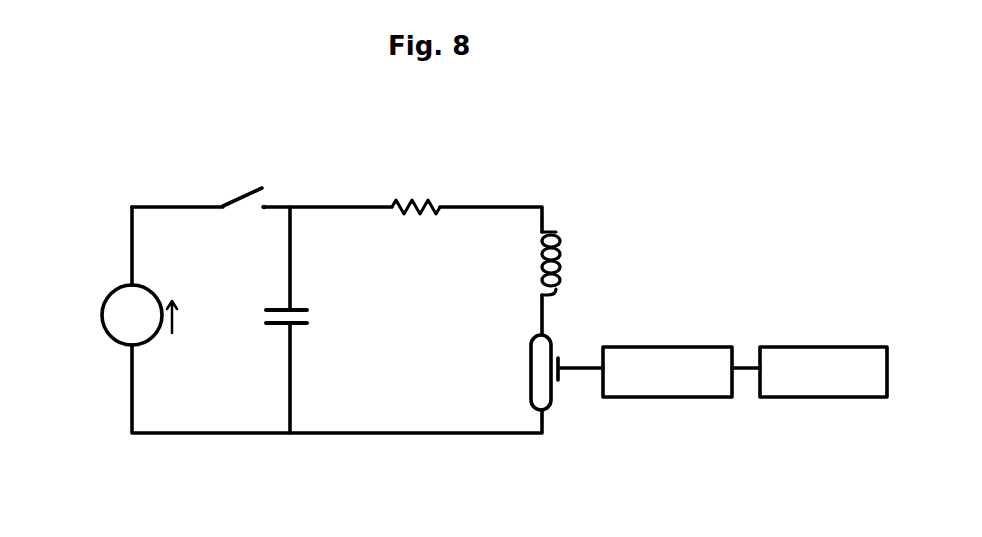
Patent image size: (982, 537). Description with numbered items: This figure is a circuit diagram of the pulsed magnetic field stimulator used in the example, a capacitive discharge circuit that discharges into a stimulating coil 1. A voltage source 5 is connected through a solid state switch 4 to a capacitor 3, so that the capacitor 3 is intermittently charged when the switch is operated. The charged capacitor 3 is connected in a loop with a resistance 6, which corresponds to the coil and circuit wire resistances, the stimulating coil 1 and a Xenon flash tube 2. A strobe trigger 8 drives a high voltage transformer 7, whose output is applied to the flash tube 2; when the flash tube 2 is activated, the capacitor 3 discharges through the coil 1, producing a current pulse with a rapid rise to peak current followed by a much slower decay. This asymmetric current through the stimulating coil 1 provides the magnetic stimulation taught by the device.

The stimulating coil 1 is at (560, 262).
The Xenon flash tube 2 is at (553, 415).
The capacitor 3 is at (312, 305).
The solid state switch 4 is at (238, 184).
The voltage source 5 is at (112, 352).
The resistance 6 is at (408, 193).
The high voltage transformer 7 is at (660, 335).
The strobe trigger 8 is at (798, 335).